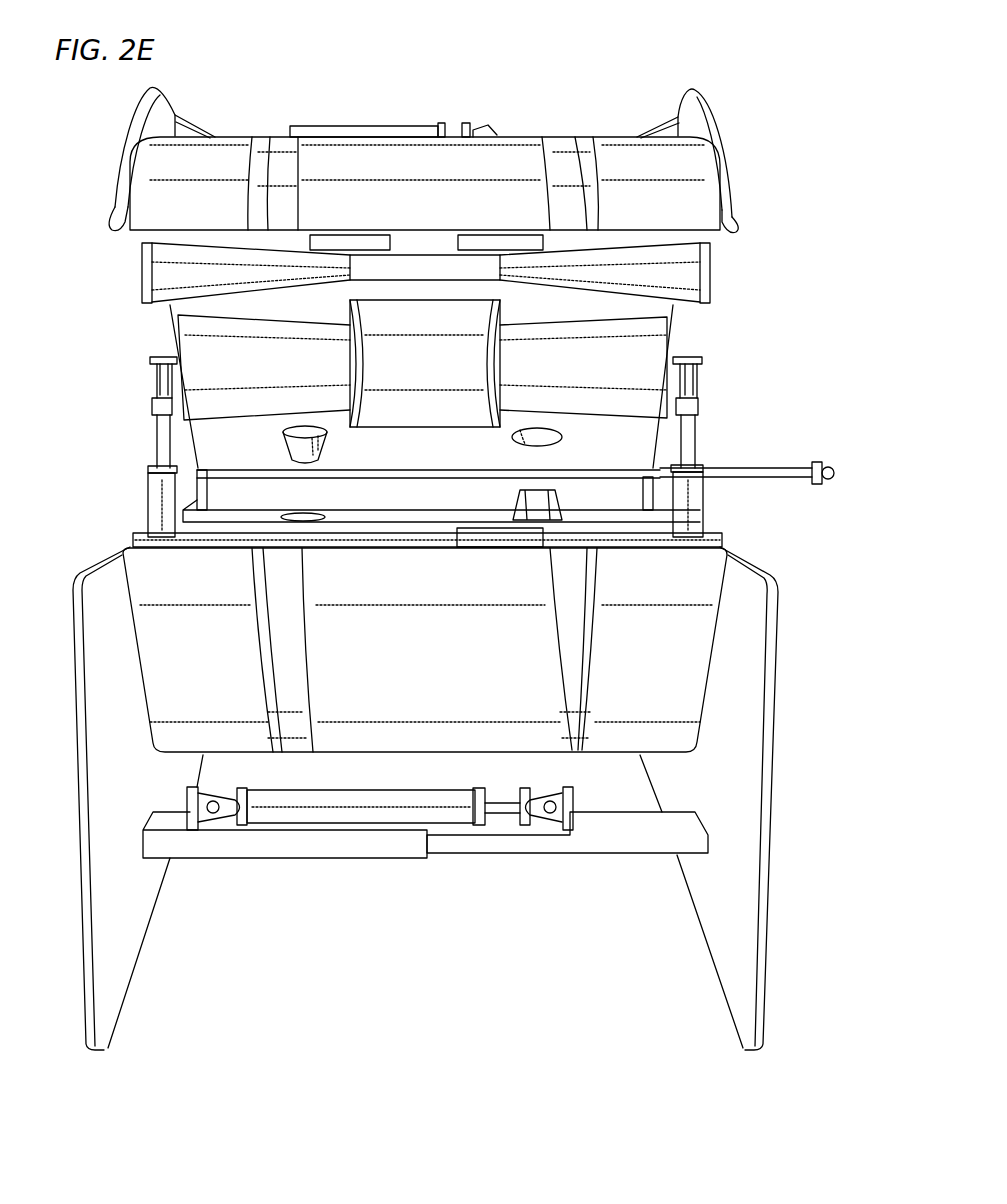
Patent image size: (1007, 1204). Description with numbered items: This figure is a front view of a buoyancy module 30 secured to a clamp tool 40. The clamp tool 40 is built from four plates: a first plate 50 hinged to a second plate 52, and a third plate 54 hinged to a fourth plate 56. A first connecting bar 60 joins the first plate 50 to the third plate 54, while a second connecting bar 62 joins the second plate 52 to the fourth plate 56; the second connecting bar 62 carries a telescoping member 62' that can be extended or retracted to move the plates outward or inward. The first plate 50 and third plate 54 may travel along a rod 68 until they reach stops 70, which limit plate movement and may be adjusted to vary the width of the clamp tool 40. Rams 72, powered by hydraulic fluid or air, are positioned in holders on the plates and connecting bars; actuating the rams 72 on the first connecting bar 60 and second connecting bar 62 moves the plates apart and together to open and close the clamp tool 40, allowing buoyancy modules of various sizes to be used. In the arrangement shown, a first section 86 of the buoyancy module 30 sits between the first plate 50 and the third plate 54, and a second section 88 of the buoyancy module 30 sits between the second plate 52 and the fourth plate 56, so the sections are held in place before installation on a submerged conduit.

The buoyancy module 30 is at (645, 360).
The clamp tool 40 is at (736, 70).
The first plate 50 is at (722, 137).
The second plate 52 is at (773, 620).
The third plate 54 is at (125, 135).
The fourth plate 56 is at (75, 618).
The first connecting bar 60 is at (493, 132).
The second connecting bar 62 is at (290, 855).
The telescoping member 62' is at (567, 855).
The rod 68 is at (813, 462).
The stops 70 is at (820, 482).
The rams 72 is at (362, 118).
The first section 86 is at (281, 376).
The second section 88 is at (426, 671).